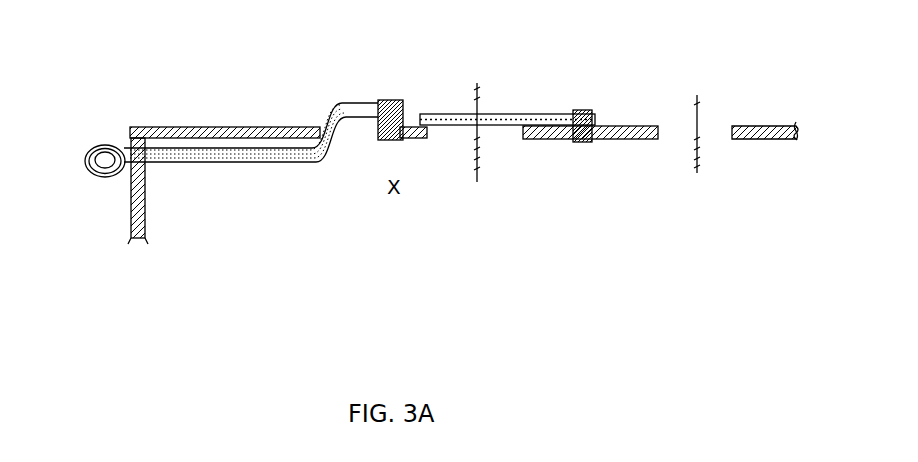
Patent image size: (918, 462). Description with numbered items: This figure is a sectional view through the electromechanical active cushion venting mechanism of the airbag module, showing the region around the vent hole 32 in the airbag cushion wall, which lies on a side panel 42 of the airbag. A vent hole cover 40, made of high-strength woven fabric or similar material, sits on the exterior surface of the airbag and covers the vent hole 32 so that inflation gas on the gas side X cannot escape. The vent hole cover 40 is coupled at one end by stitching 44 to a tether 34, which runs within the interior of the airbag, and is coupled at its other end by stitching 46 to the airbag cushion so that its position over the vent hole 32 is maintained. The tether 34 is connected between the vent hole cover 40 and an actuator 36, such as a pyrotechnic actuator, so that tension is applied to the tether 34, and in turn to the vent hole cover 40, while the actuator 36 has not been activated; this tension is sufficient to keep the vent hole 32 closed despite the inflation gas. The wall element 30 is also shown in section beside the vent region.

The substrate 30 is at (700, 147).
The vent hole 32 is at (482, 145).
The tether 34 is at (197, 167).
The actuator 36 is at (95, 173).
The vent hole cover 40 is at (502, 112).
The side panel 42 is at (190, 123).
The stitching 44 is at (376, 105).
The stitching 46 is at (586, 106).